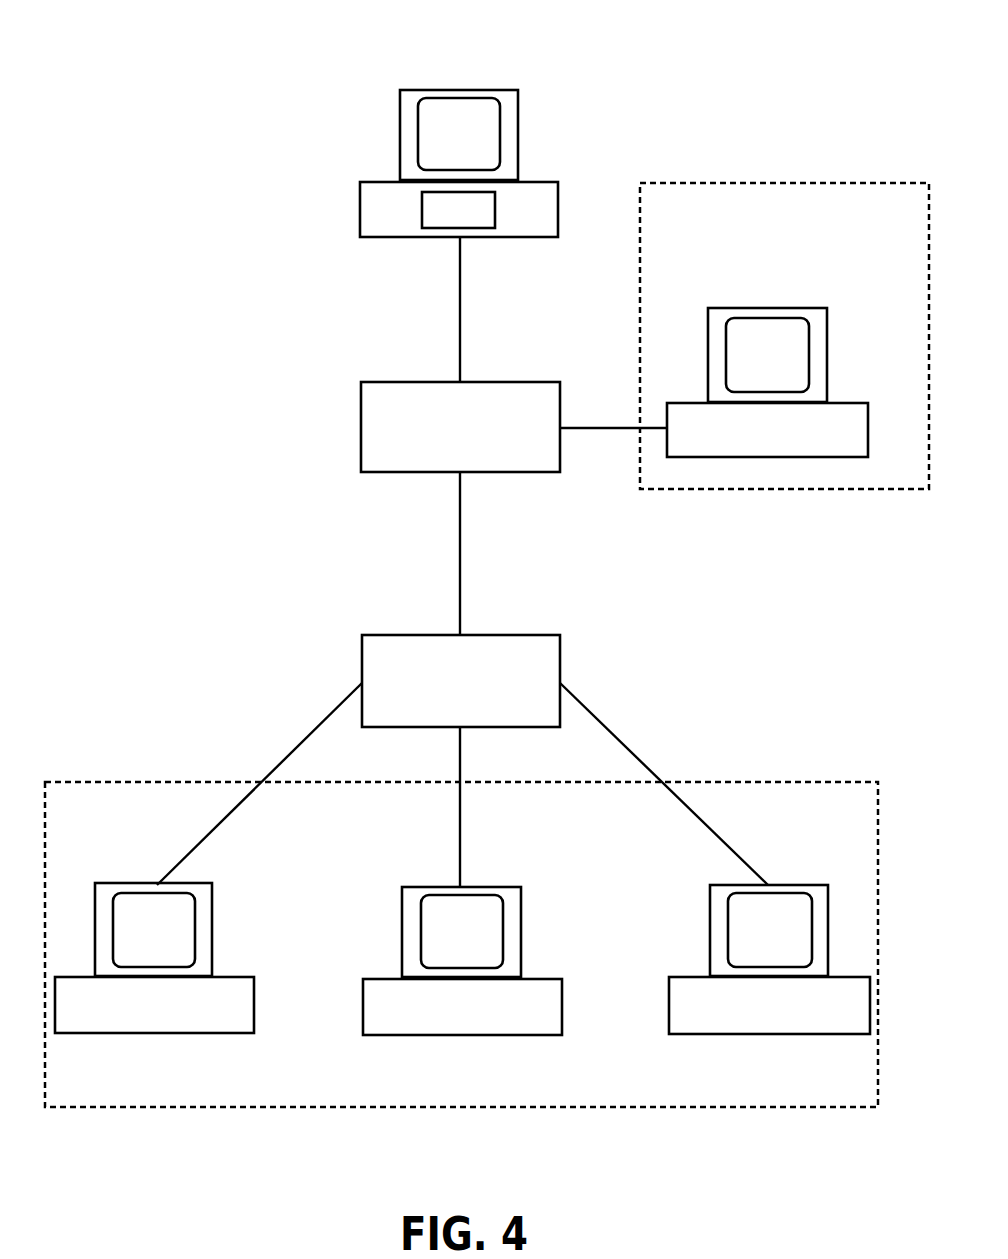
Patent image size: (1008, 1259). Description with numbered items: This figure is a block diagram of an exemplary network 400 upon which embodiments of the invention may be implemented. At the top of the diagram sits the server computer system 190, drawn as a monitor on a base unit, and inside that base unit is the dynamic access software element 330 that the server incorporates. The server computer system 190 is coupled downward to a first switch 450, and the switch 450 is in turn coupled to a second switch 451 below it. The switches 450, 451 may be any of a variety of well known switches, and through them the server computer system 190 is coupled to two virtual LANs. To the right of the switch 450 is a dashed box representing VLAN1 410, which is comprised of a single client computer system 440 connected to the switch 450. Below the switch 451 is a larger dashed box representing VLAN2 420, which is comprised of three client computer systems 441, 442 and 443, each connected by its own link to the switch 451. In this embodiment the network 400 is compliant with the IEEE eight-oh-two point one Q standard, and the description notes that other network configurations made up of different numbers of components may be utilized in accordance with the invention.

The network 400 is at (482, 24).
The server computer system 190 is at (431, 205).
The dynamic access software element 330 is at (410, 223).
The switch 450 is at (481, 452).
The switch 451 is at (481, 707).
The VLAN1 410 is at (790, 167).
The VLAN2 420 is at (172, 767).
The client computer system 440 is at (720, 292).
The client computer system 441 is at (113, 870).
The client computer system 442 is at (506, 873).
The client computer system 443 is at (816, 870).